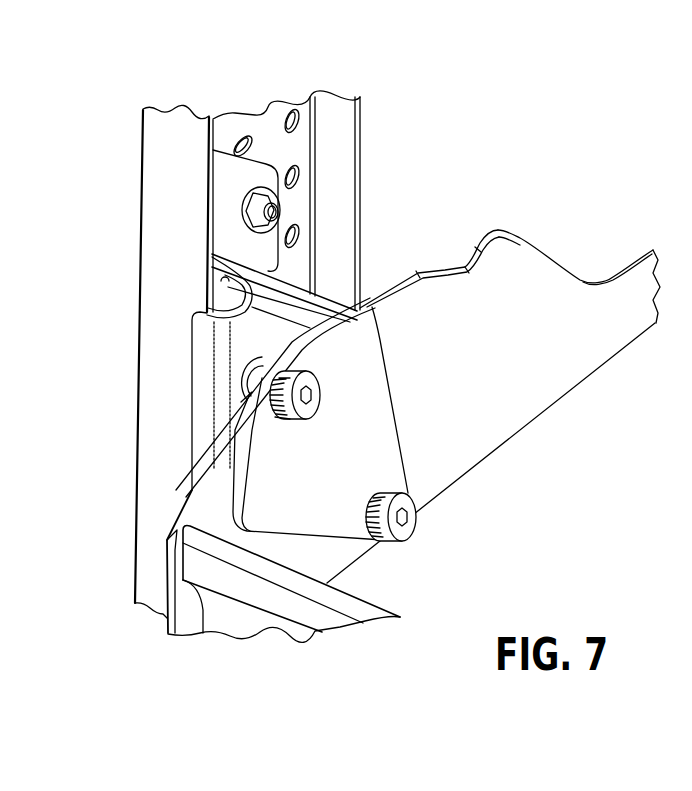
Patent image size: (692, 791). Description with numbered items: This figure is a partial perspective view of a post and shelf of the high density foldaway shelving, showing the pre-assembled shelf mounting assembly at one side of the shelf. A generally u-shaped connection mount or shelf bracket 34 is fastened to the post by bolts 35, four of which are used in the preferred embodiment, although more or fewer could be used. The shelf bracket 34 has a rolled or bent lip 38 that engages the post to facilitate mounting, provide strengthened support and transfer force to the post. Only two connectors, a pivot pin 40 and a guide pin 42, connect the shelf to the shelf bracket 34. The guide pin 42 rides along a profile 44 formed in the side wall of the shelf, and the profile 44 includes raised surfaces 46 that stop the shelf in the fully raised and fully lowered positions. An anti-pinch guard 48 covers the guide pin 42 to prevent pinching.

The shelf bracket 34 is at (250, 177).
The bolt 35 is at (281, 219).
The lip 38 is at (198, 380).
The pivot pin 40 is at (407, 535).
The guide pin 42 is at (317, 390).
The profile 44 is at (428, 272).
The raised surface 46 is at (498, 253).
The anti-pinch guard 48 is at (281, 500).